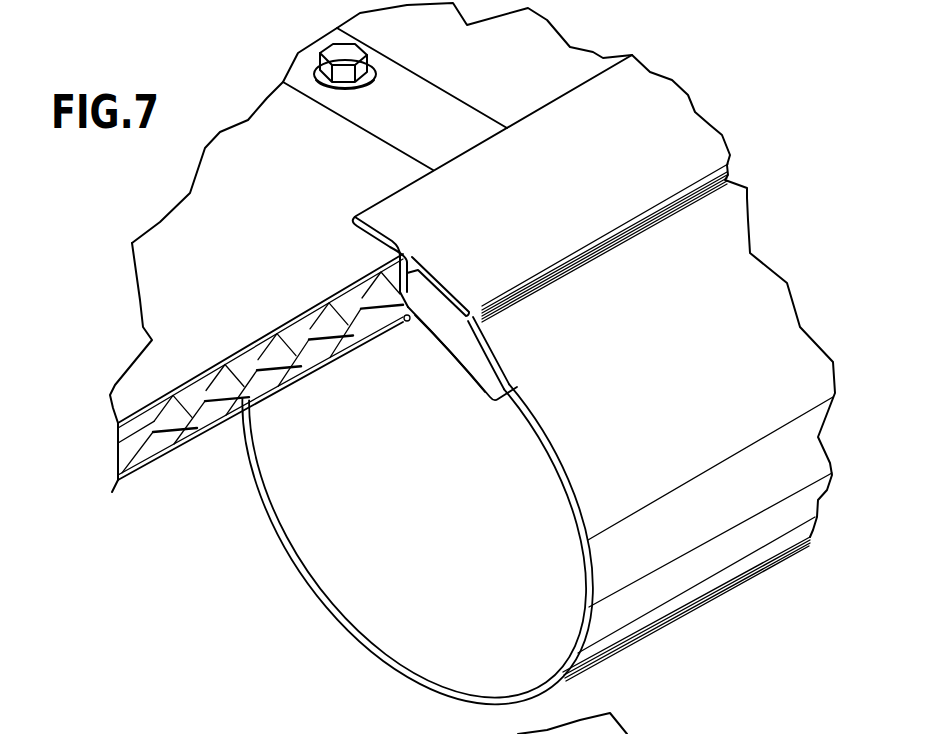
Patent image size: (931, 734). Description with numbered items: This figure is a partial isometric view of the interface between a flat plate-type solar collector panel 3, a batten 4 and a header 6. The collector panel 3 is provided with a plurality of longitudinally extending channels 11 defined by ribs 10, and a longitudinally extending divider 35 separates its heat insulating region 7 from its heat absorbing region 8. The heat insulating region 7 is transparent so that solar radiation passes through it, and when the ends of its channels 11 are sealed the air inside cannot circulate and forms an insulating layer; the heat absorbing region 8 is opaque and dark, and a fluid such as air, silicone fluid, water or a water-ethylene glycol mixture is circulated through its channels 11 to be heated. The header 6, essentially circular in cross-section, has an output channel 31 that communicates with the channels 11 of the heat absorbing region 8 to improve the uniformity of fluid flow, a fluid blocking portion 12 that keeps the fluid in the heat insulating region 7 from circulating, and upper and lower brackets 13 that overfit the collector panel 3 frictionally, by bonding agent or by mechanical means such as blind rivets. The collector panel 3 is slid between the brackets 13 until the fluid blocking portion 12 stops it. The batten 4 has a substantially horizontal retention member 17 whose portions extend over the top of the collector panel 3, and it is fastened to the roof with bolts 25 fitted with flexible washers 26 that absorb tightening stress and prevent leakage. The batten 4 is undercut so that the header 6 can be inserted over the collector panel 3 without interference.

The solar collector panel 3 is at (249, 116).
The batten 4 is at (484, 109).
The header 6 is at (755, 226).
The heat insulating region 7 is at (108, 441).
The heat absorbing region 8 is at (110, 473).
The ribs 10 is at (340, 298).
The channels 11 is at (350, 287).
The fluid blocking portion 12 is at (412, 266).
The brackets 13 is at (408, 322).
The retention member 17 is at (443, 113).
The bolts 25 is at (353, 56).
The flexible washers 26 is at (371, 72).
The output channel 31 is at (483, 370).
The divider 35 is at (310, 370).